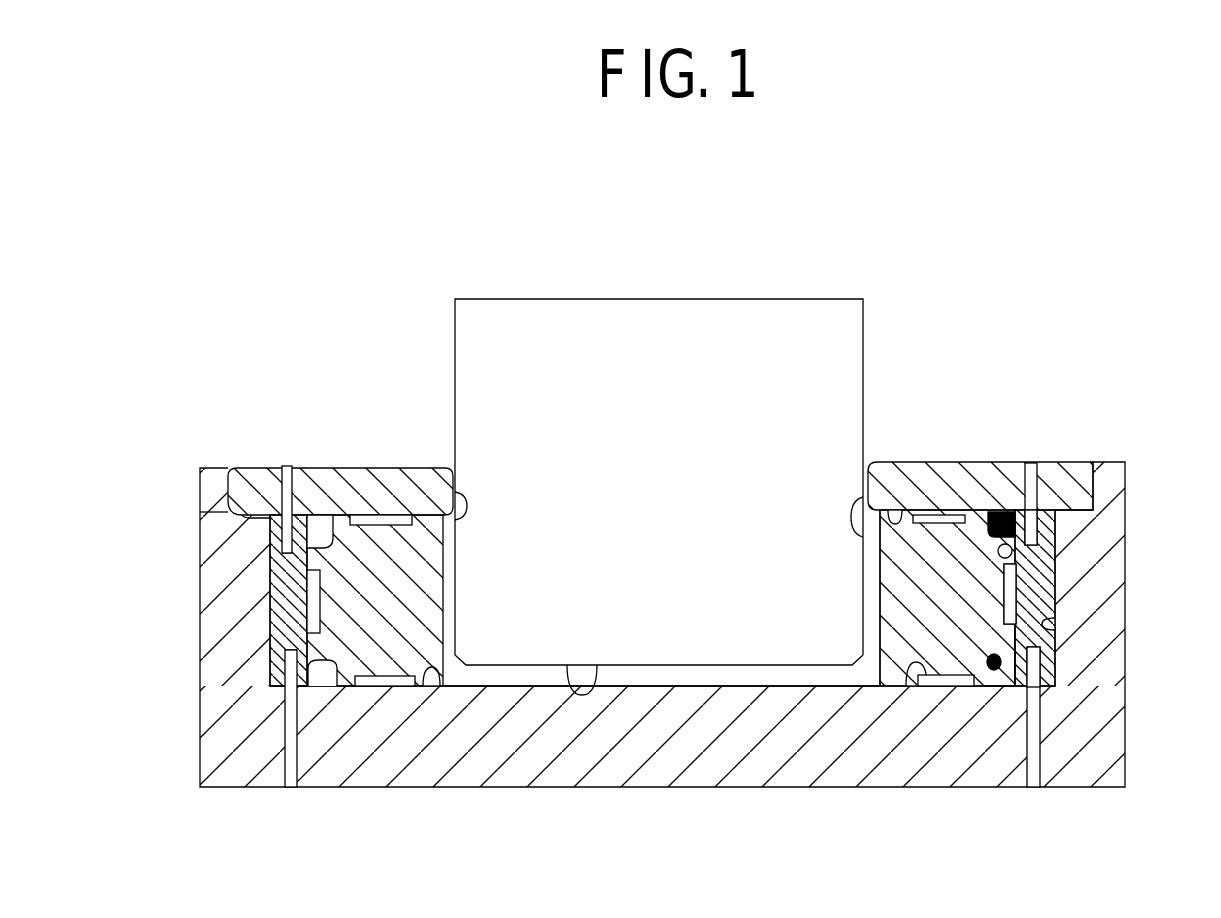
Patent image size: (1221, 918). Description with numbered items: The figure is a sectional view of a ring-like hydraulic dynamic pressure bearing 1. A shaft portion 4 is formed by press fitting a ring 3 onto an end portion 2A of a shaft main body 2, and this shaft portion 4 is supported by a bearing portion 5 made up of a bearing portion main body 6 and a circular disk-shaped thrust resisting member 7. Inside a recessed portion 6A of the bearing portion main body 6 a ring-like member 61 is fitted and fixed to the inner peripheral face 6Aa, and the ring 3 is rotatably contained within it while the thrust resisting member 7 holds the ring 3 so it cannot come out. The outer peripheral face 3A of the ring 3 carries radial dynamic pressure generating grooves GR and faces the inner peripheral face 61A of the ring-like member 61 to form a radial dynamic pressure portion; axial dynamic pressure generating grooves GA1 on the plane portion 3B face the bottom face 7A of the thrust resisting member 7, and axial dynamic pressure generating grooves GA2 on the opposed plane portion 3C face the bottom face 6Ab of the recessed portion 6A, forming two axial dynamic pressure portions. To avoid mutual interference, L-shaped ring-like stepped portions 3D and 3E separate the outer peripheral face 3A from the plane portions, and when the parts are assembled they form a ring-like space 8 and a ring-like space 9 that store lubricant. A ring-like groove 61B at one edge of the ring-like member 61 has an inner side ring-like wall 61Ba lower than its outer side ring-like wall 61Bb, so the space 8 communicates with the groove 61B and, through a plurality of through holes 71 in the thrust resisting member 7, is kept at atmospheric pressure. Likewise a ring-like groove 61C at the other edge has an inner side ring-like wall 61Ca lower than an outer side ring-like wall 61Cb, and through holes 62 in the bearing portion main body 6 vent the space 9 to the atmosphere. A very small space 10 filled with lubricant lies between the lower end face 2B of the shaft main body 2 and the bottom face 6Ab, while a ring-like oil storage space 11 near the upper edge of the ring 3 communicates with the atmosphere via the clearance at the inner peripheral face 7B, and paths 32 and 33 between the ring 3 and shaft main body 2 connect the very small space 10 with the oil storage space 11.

The ring-like hydraulic dynamic pressure bearing 1 is at (860, 230).
The shaft main body 2 is at (650, 320).
The end portion 2A is at (662, 647).
The lower end face 2B is at (583, 668).
The ring 3 is at (990, 588).
The outer peripheral face 3A is at (990, 668).
The plane portion 3B is at (997, 516).
The plane portion 3C is at (985, 668).
The ring-like stepped portion 3D is at (1005, 586).
The ring-like stepped portion 3E is at (993, 660).
The path 33 is at (874, 538).
The shaft portion 4 is at (446, 320).
The bearing portion 5 is at (1134, 485).
The bearing portion main body 6 is at (1108, 743).
The recessed portion 6A is at (928, 688).
The inner peripheral face 6Aa is at (1058, 628).
The bottom face 6Ab is at (441, 690).
The thrust resisting member 7 is at (947, 462).
The bottom face 7A is at (892, 510).
The inner peripheral face 7B is at (455, 483).
The ring-like space 8 is at (990, 525).
The ring-like space 9 is at (1012, 668).
The very small space 10 is at (532, 690).
The ring-like oil storage space 11 is at (467, 507).
The path 32 is at (447, 600).
The ring-like member 61 is at (290, 590).
The inner peripheral face 61A is at (1040, 552).
The ring-like groove 61B is at (200, 497).
The inner side ring-like wall 61Ba is at (298, 540).
The outer side ring-like wall 61Bb is at (273, 520).
The ring-like groove 61C is at (287, 697).
The inner side ring-like wall 61Ca is at (308, 690).
The outer side ring-like wall 61Cb is at (300, 665).
The through holes 62 is at (295, 700).
The through holes 71 is at (287, 468).
The axial dynamic pressure generating grooves GA1 is at (360, 515).
The axial dynamic pressure generating grooves GA2 is at (382, 690).
The radial dynamic pressure generating grooves GR is at (300, 605).